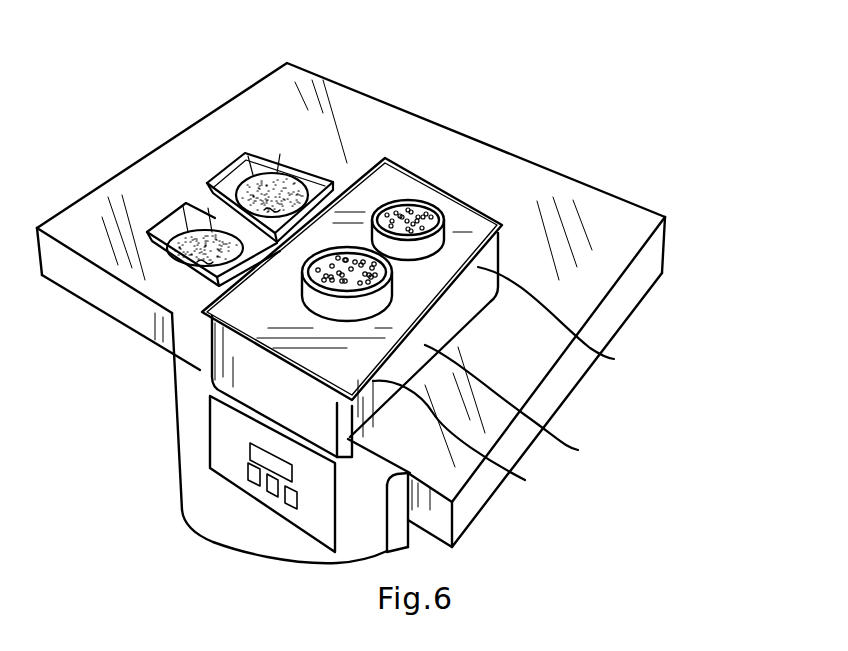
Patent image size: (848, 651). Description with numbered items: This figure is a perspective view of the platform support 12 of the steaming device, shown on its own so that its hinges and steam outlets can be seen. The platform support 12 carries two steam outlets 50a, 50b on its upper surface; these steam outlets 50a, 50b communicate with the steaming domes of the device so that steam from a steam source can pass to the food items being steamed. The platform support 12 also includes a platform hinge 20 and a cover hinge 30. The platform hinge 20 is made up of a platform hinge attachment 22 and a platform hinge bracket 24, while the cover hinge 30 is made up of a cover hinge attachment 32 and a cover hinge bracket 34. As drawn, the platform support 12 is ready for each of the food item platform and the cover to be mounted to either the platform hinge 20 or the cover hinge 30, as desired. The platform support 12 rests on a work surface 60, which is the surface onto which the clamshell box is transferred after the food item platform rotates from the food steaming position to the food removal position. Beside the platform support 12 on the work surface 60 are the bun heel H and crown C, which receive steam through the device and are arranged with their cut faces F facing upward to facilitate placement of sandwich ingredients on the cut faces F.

The platform support 12 is at (578, 450).
The platform hinge 20 is at (223, 332).
The platform hinge attachment 22 is at (168, 313).
The platform hinge bracket 24 is at (362, 175).
The cover hinge 30 is at (525, 480).
The cover hinge attachment 32 is at (503, 224).
The cover hinge bracket 34 is at (614, 359).
The steam outlet 50a is at (323, 283).
The steam outlet 50b is at (407, 207).
The work surface 60 is at (532, 178).
The crown C is at (277, 172).
The heel H is at (187, 230).
The cut face F is at (237, 219).